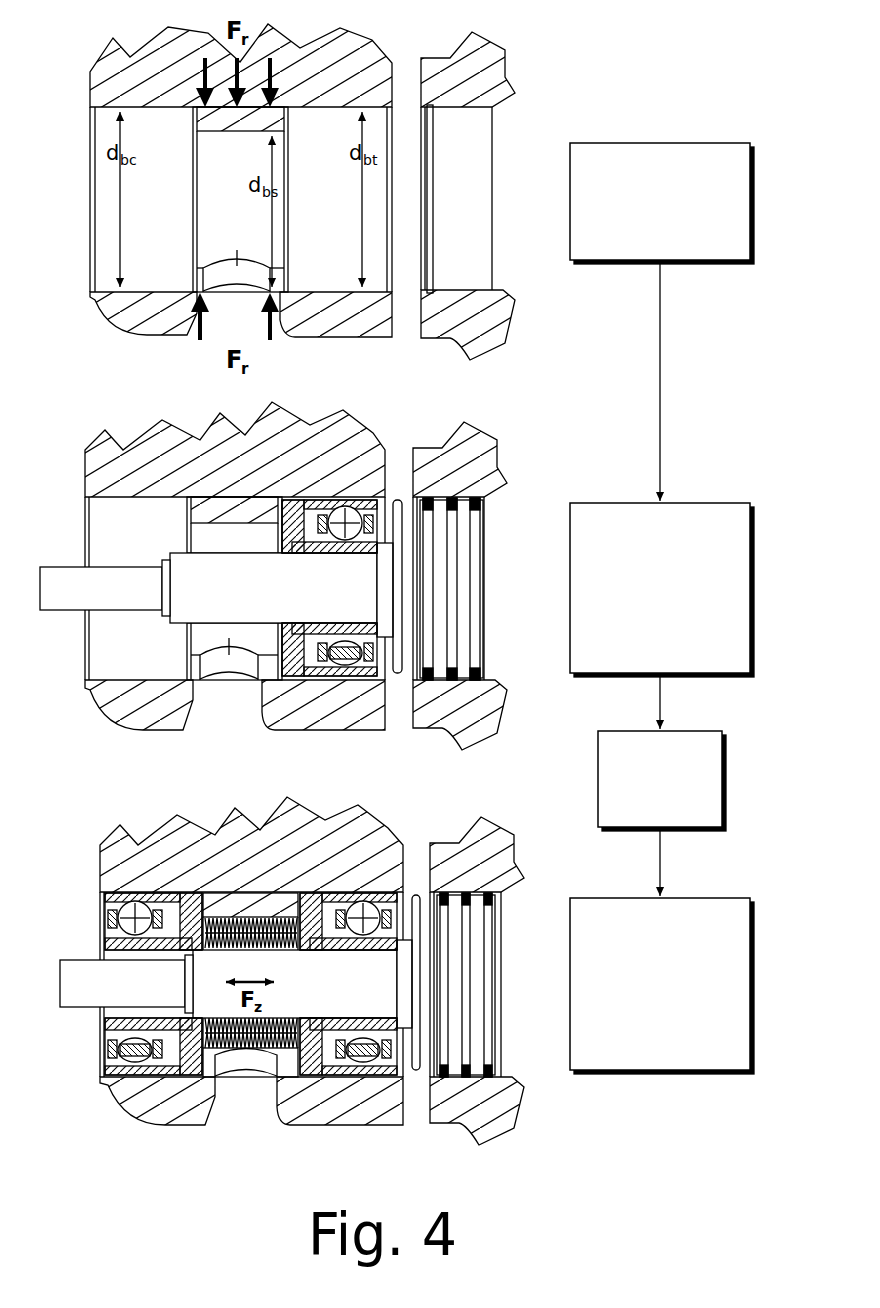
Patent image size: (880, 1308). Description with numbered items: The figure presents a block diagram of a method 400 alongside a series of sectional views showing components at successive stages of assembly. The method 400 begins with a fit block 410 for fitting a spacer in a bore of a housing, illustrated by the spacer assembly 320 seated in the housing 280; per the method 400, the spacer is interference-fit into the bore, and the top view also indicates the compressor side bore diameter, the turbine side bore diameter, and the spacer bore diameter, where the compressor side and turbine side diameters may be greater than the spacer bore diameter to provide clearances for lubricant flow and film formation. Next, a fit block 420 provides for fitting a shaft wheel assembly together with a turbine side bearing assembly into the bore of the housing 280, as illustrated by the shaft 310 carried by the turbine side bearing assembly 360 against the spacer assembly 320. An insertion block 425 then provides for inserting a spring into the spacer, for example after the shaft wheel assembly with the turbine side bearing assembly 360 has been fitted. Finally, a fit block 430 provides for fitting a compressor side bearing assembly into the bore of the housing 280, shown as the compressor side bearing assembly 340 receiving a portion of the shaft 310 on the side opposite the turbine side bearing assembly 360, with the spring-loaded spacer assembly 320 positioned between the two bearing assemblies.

The housing 280 is at (360, 76).
The shaft 310 is at (260, 599).
The spacer assembly 320 is at (190, 203).
The compressor side bearing assembly 340 is at (138, 970).
The turbine side bearing assembly 360 is at (340, 572).
The method 400 is at (711, 58).
The fit block 410 is at (643, 234).
The fit block 420 is at (643, 647).
The insertion block 425 is at (662, 781).
The fit block 430 is at (643, 1030).